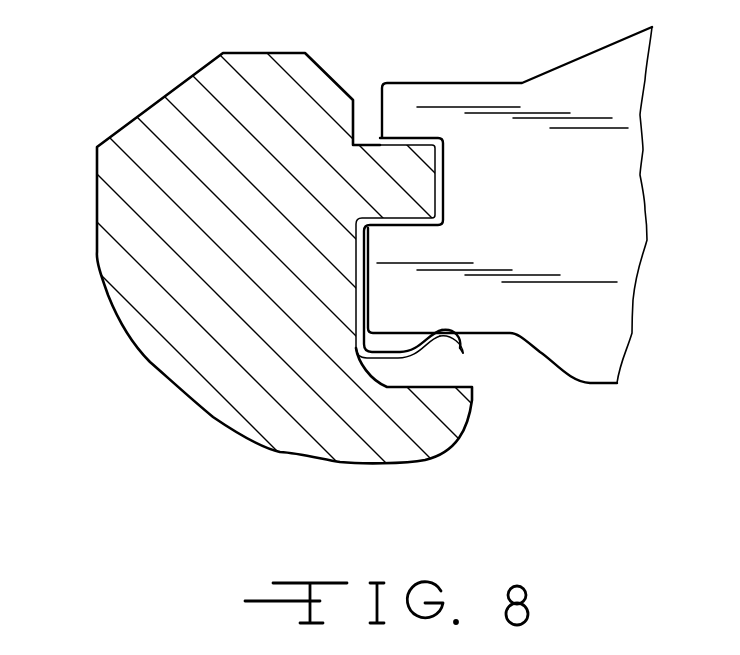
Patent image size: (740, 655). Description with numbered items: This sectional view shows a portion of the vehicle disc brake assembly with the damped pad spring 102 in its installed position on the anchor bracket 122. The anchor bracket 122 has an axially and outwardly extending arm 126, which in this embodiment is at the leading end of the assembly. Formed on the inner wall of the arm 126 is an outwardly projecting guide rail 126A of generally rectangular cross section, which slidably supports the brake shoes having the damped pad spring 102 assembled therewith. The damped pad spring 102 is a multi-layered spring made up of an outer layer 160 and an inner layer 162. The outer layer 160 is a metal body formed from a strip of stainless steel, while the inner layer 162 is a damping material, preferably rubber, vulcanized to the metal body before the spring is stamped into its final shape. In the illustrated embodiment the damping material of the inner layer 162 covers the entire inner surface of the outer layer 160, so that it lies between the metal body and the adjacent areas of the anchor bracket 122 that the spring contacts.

The damped pad spring 102 is at (410, 356).
The anchor bracket 122 is at (189, 414).
The arm 126 is at (152, 99).
The guide rail 126A is at (390, 187).
The outer layer 160 is at (444, 186).
The inner layer 162 is at (464, 358).